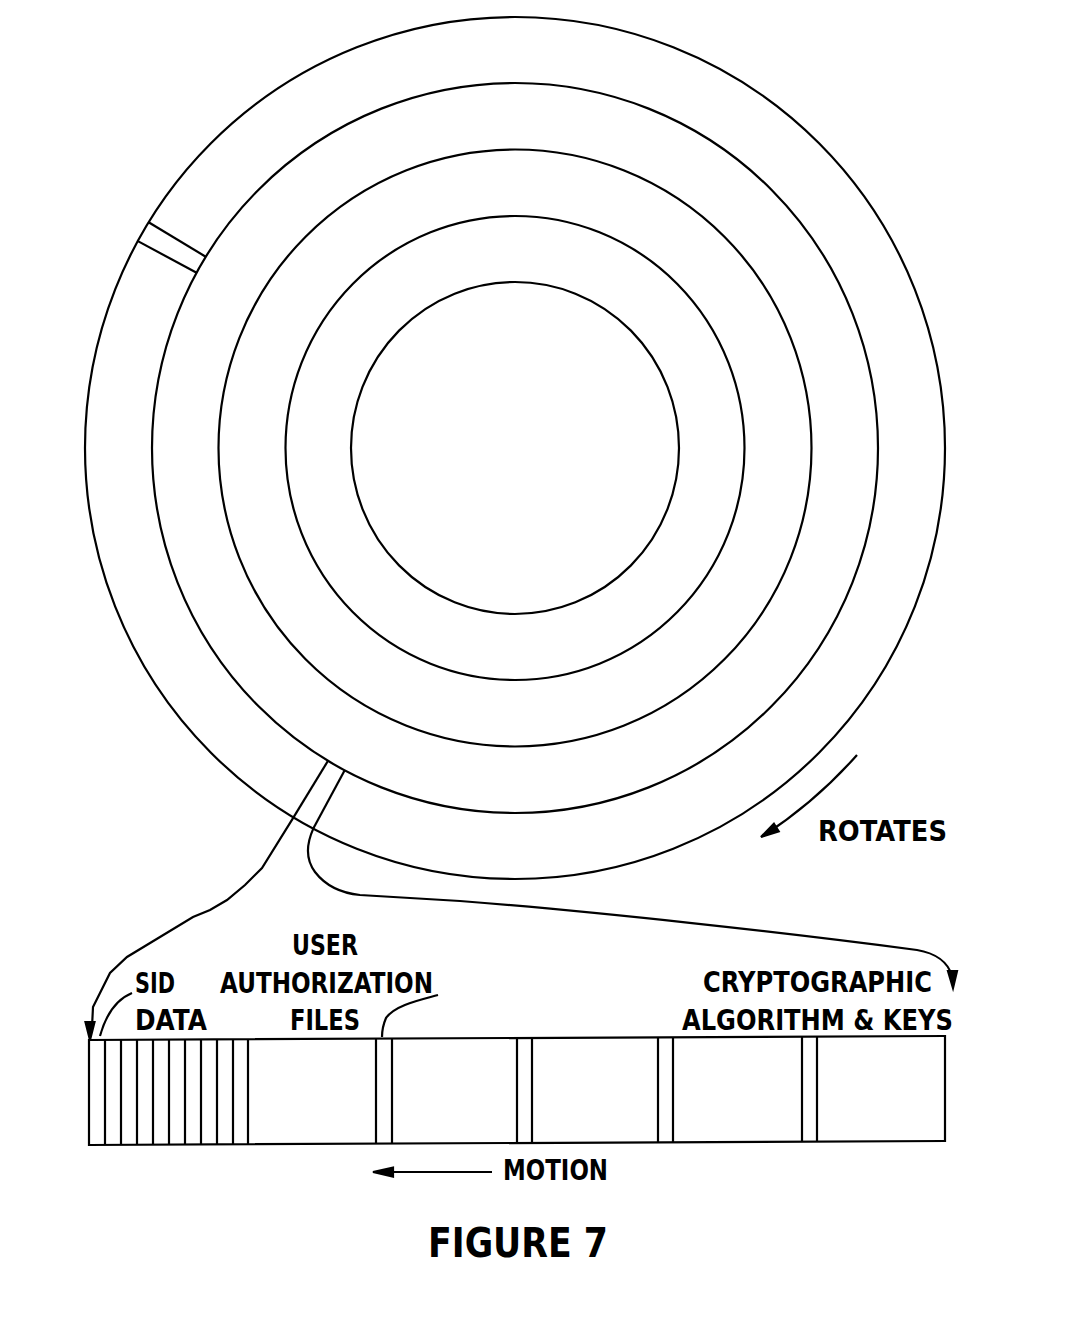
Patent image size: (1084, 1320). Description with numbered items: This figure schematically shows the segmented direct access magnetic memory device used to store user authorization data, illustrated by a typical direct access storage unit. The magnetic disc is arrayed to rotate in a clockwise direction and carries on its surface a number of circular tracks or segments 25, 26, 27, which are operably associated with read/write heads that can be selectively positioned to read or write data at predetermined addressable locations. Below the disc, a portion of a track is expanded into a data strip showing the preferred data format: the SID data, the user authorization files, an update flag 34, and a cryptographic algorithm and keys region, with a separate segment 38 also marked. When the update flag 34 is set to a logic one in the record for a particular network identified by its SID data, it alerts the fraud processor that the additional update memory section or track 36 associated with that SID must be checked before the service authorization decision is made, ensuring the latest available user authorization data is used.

The circular track 25 is at (515, 448).
The circular track 26 is at (515, 448).
The circular track 27 is at (515, 448).
The update flag 34 is at (662, 1028).
The update memory section 36 is at (529, 1072).
The separator segment 38 is at (808, 1152).